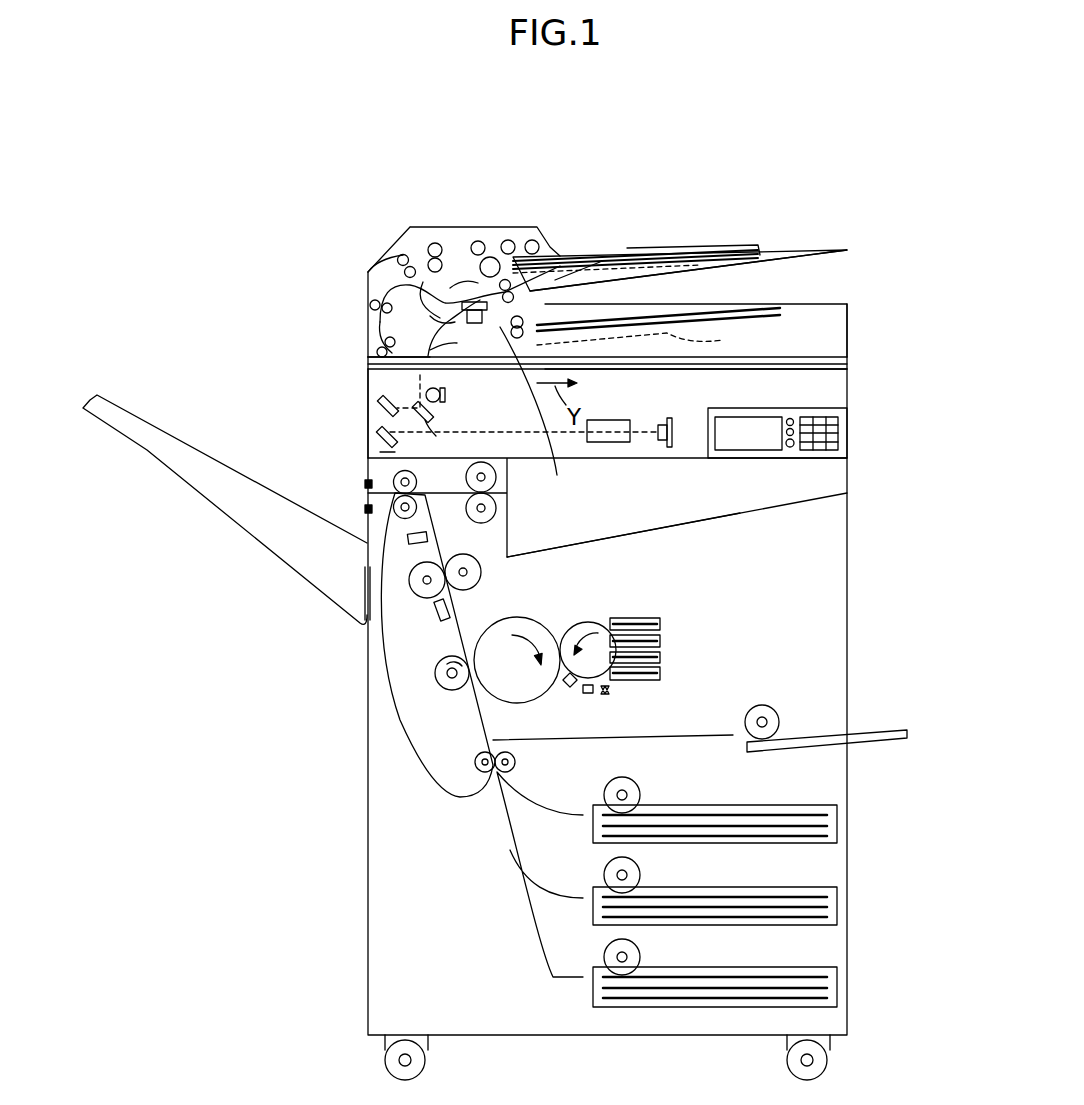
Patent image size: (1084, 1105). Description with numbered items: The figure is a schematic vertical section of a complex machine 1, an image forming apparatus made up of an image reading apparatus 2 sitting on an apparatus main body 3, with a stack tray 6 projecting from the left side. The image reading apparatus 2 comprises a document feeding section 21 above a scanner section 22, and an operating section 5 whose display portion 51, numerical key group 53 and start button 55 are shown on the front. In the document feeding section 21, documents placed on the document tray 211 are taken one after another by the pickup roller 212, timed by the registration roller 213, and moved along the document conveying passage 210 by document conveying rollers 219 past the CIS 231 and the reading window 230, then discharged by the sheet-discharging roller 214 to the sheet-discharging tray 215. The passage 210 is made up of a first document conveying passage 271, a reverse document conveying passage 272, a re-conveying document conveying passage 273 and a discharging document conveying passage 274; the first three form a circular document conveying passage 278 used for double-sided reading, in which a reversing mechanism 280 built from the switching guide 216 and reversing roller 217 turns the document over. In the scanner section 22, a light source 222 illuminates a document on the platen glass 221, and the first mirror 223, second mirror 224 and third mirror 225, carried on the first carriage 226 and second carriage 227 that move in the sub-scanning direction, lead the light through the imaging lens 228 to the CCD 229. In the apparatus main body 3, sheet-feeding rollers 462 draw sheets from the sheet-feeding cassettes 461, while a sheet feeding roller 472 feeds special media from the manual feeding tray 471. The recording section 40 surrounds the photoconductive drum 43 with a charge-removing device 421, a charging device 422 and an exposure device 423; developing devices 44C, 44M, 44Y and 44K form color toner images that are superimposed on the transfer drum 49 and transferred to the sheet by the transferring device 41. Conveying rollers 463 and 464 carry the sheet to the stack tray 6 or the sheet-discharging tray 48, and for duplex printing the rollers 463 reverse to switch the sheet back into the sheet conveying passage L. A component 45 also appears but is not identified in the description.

The complex machine 1 is at (303, 157).
The image reading apparatus 2 is at (658, 233).
The apparatus main body 3 is at (823, 647).
The operating section 5 is at (800, 465).
The stack tray 6 is at (270, 565).
The document feeding section 21 is at (850, 334).
The scanner section 22 is at (850, 378).
The recording section 40 is at (412, 660).
The transferring device 41 is at (442, 688).
The photoconductive drum 43 is at (597, 635).
The developing device 44C is at (660, 622).
The developing device 44M is at (660, 641).
The developing device 44Y is at (660, 657).
The developing device 44K is at (660, 673).
The tension roller 45 is at (425, 593).
The sheet-discharging tray 48 is at (755, 525).
The transfer drum 49 is at (505, 630).
The display portion 51 is at (740, 418).
The numerical key group 53 is at (850, 438).
The start button 55 is at (788, 447).
The sheet conveying passage L is at (374, 647).
The document conveying passage 210 is at (412, 248).
The document tray 211 is at (795, 250).
The pickup roller 212 is at (534, 242).
The registration roller 213 is at (440, 245).
The sheet-discharging roller 214 is at (555, 280).
The sheet-discharging tray 215 is at (652, 340).
The switching guide 216 is at (423, 308).
The reversing roller 217 is at (515, 282).
The document conveying roller 219 is at (373, 298).
The platen glass 221 is at (607, 372).
The light source 222 is at (440, 398).
The first mirror 223 is at (432, 422).
The second mirror 224 is at (383, 398).
The third mirror 225 is at (383, 432).
The first carriage 226 is at (446, 394).
The second carriage 227 is at (392, 450).
The imaging lens 228 is at (600, 445).
The CCD 229 is at (670, 447).
The reading window 230 is at (393, 378).
The CIS 231 is at (495, 262).
The first document conveying passage 271 is at (385, 303).
The reverse document conveying passage 272 is at (465, 341).
The re-conveying document conveying passage 273 is at (423, 282).
The discharging document conveying passage 274 is at (541, 414).
The circular document conveying passage 278 is at (375, 318).
The reversing mechanism 280 is at (463, 283).
The charge-removing device 421 is at (568, 684).
The charging device 422 is at (588, 695).
The exposure device 423 is at (608, 695).
The sheet-feeding cassettes 461 is at (840, 990).
The sheet-feeding rollers 462 is at (640, 797).
The conveying rollers 463 is at (468, 482).
The conveying rollers 464 is at (356, 496).
The manual feeding tray 471 is at (882, 732).
The sheet feeding roller 472 is at (762, 705).